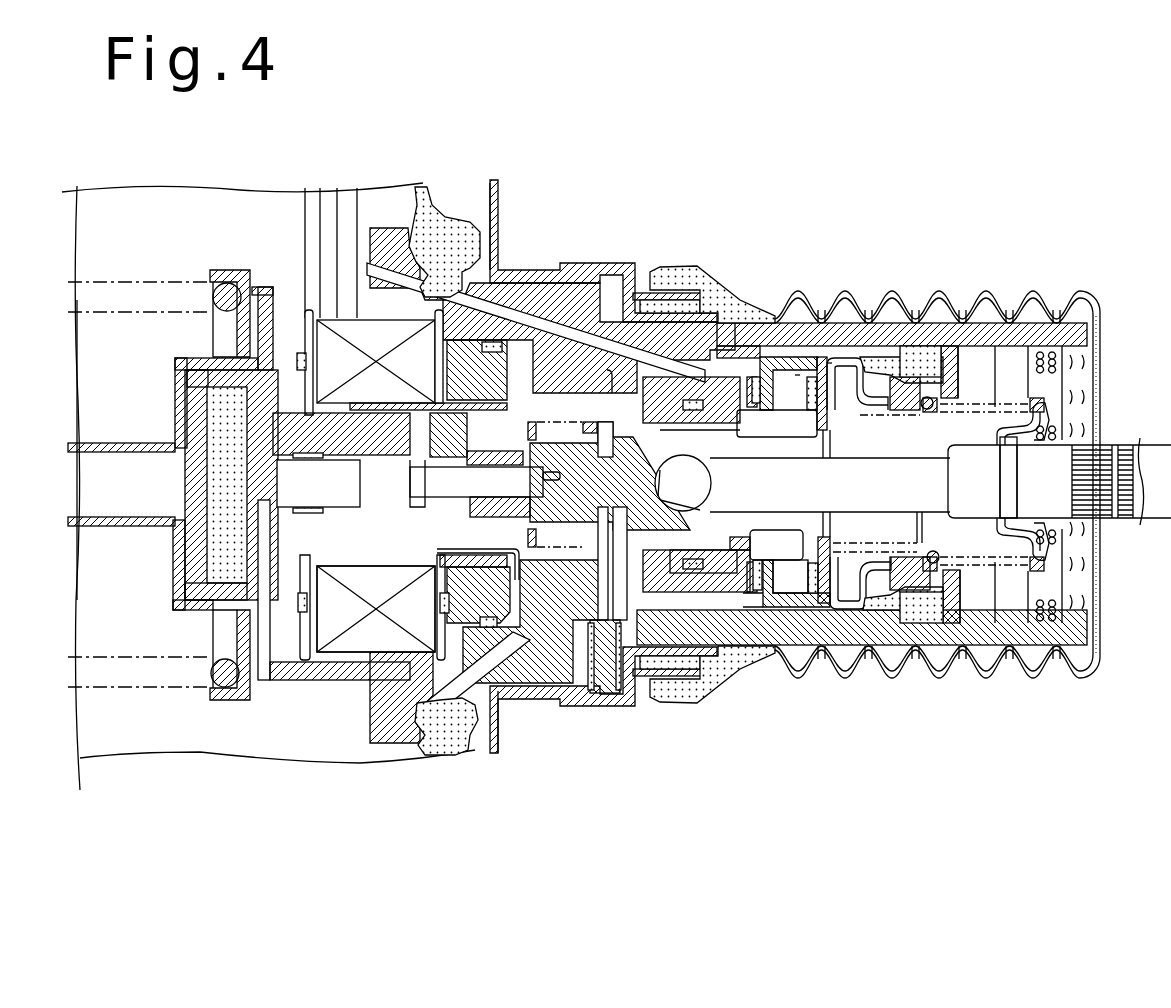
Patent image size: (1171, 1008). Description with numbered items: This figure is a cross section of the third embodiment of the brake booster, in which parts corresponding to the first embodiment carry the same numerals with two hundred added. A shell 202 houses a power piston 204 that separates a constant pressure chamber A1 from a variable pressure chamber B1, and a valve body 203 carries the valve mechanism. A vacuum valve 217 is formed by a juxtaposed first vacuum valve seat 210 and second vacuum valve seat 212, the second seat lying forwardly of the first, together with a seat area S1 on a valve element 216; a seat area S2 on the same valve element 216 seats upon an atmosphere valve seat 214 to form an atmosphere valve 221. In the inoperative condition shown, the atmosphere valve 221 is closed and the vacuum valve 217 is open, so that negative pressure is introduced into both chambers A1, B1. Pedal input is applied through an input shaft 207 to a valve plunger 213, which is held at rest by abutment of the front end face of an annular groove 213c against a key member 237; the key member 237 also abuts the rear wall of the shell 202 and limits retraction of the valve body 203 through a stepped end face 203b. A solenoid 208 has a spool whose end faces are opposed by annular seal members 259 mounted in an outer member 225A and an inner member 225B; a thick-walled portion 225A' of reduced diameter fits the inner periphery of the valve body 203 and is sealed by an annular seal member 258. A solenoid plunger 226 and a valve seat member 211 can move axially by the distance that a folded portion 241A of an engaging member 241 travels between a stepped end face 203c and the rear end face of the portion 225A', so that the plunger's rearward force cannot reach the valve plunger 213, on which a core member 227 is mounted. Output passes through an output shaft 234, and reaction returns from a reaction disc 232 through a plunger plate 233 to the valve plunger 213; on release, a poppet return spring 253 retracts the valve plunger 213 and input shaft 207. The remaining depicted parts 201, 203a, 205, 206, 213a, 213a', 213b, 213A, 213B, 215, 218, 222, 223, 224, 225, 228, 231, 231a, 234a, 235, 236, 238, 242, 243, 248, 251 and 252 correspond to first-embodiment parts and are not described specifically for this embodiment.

The clutch actuator 201 is at (712, 235).
The shell 202 is at (500, 242).
The valve body 203 is at (590, 298).
The cylinder outer wall 203a is at (945, 335).
The stepped end face 203b is at (600, 437).
The stepped end face 203c is at (512, 660).
The power piston 204 is at (412, 203).
The seal member 205 is at (443, 207).
The piston 206 is at (847, 603).
The input shaft 207 is at (972, 493).
The solenoid 208 is at (337, 612).
The first vacuum valve seat 210 is at (745, 373).
The valve seat member 211 is at (713, 553).
The second vacuum valve seat 212 is at (740, 400).
The valve plunger 213 is at (683, 483).
The plunger rod 213a is at (485, 482).
The plunger body 213a' is at (610, 476).
The plunger collar 213b is at (475, 472).
The annular groove 213c is at (678, 483).
The ball 213A is at (681, 502).
The rod end 213B is at (360, 487).
The atmosphere valve seat 214 is at (805, 400).
The O-ring 215 is at (873, 423).
The valve element 216 is at (822, 390).
The vacuum valve 217 is at (768, 388).
The bracket 218 is at (618, 370).
The atmosphere valve 221 is at (783, 482).
The boot end seal 222 is at (632, 697).
The boot 223 is at (997, 610).
The boot end 224 is at (1073, 617).
The release bearing 225 is at (266, 688).
The outer member 225A is at (340, 694).
The portion of reduced diameter 225A' is at (448, 607).
The inner member 225B is at (263, 578).
The solenoid plunger 226 is at (377, 437).
The core member 227 is at (425, 433).
The bearing 228 is at (345, 403).
The sleeve 231 is at (318, 483).
The sleeve seal 231a is at (287, 515).
The reaction disc 232 is at (213, 530).
The plunger plate 233 is at (247, 460).
The output shaft 234 is at (147, 468).
The plate flange 234a is at (193, 393).
The cover 235 is at (192, 353).
The bearing 236 is at (150, 288).
The key member 237 is at (627, 703).
The snap ring 238 is at (307, 453).
The engaging member 241 is at (420, 533).
The folded portion 241A is at (575, 655).
The pin 242 is at (560, 425).
The bush 243 is at (493, 435).
The collar 248 is at (475, 520).
The snap ring 251 is at (998, 433).
The retainer 252 is at (947, 387).
The poppet return spring 253 is at (977, 407).
The annular seal member 258 is at (505, 695).
The annular seal members 259 is at (303, 600).
The constant pressure chamber A1 is at (240, 227).
The variable pressure chamber B1 is at (490, 206).
The seat area S1 is at (800, 375).
The seat area S2 is at (830, 363).